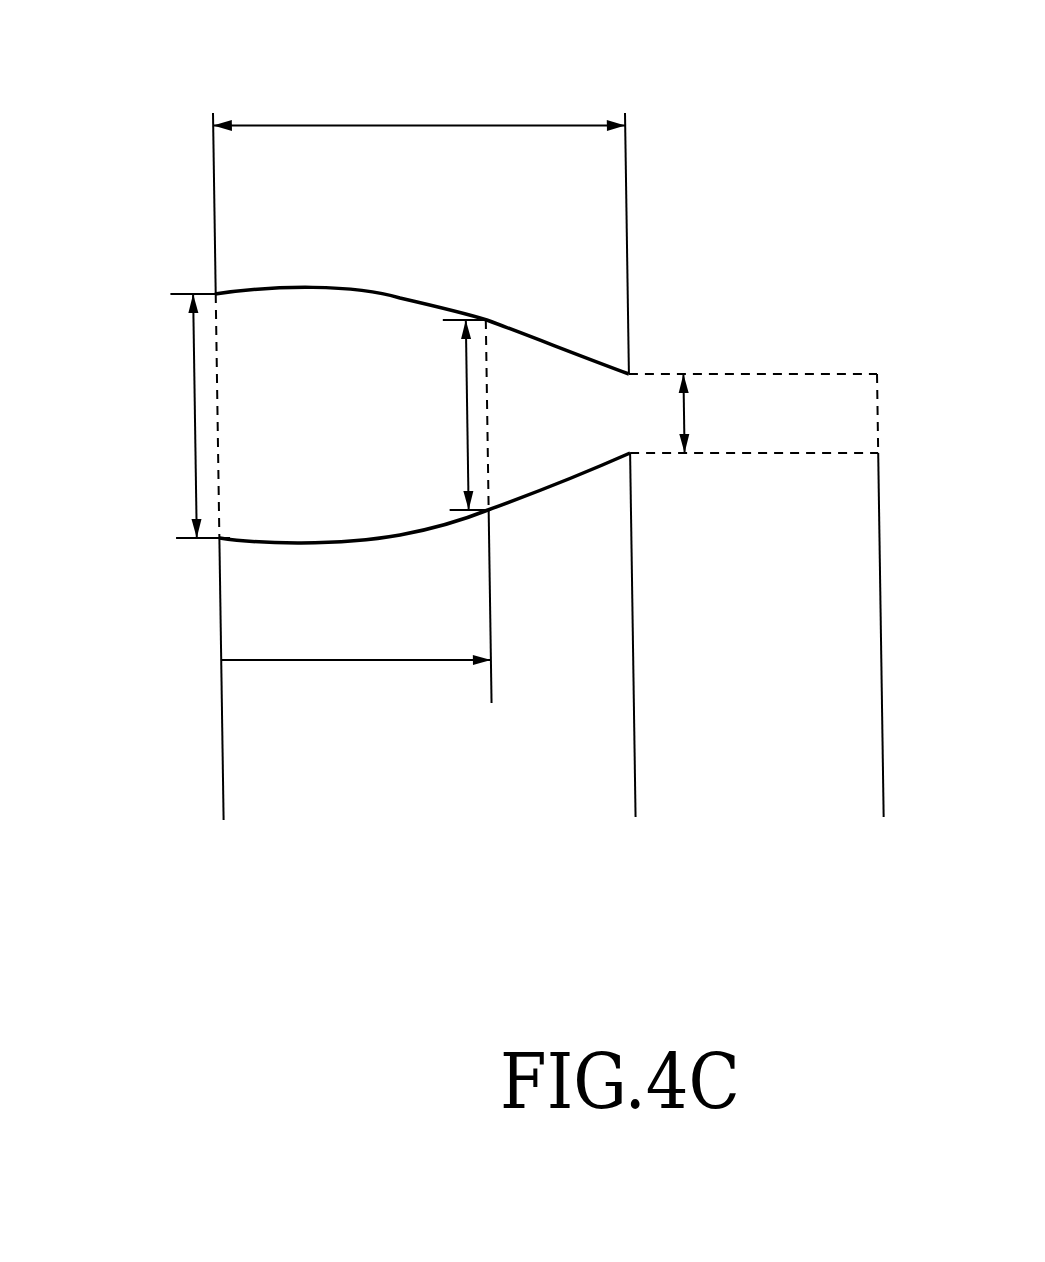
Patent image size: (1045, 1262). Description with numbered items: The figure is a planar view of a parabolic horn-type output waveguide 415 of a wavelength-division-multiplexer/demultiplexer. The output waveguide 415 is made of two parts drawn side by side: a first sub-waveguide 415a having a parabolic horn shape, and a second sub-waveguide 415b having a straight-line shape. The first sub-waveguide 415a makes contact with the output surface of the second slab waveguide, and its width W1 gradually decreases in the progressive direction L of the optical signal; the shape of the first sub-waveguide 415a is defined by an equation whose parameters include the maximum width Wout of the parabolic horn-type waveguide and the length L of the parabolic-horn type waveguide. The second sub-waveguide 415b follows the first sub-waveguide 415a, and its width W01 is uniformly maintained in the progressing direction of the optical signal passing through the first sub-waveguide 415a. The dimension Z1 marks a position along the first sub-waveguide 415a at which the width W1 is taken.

The output waveguide 415 is at (795, 76).
The first sub-waveguide 415a is at (623, 773).
The second sub-waveguide 415b is at (871, 771).
The length of the parabolic-horn type waveguide L is at (420, 125).
The maximum width of the parabolic horn-type waveguide Wout is at (188, 417).
The width of the first sub-waveguide W1 is at (461, 511).
The narrow section width W01 is at (706, 413).
The axial position Z1 is at (356, 676).